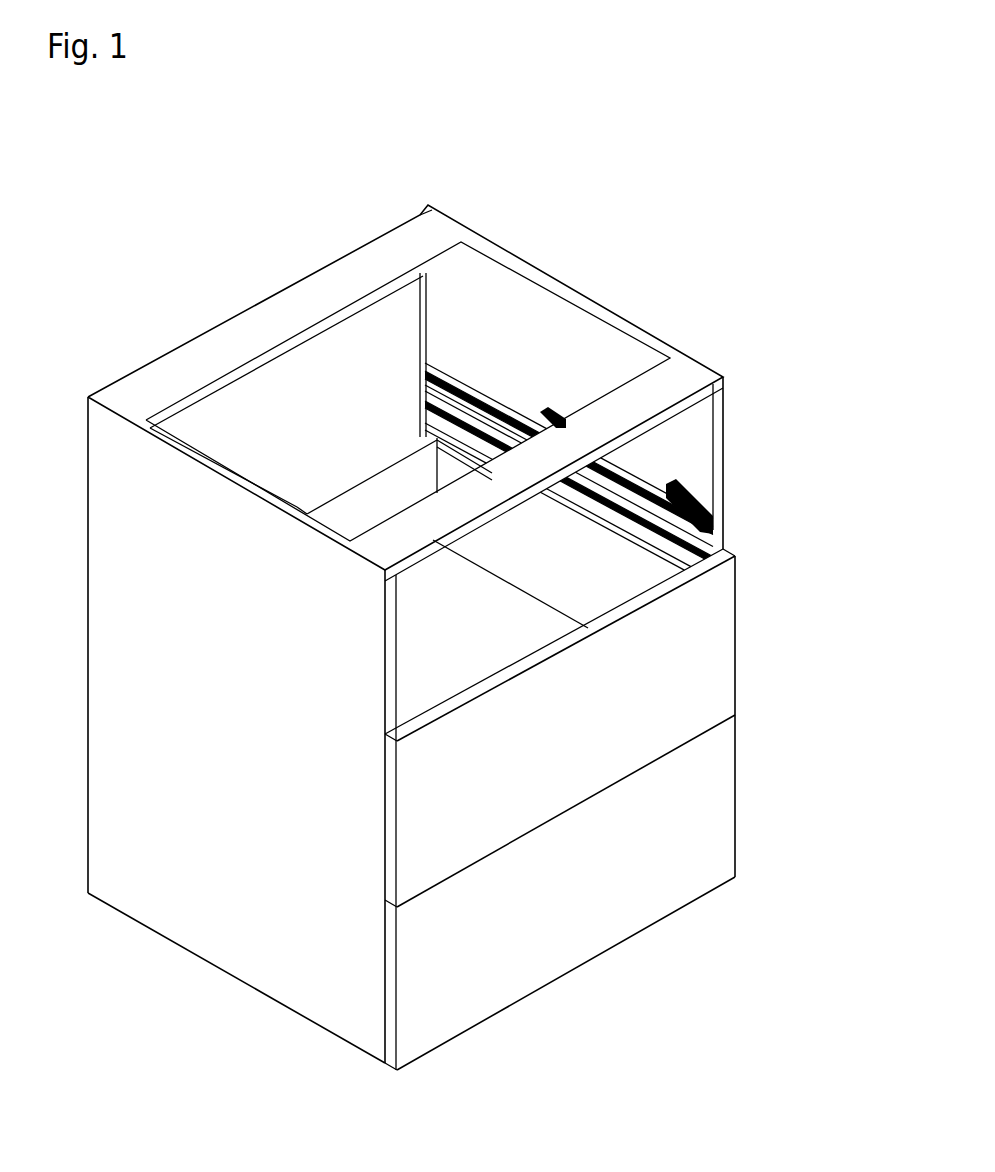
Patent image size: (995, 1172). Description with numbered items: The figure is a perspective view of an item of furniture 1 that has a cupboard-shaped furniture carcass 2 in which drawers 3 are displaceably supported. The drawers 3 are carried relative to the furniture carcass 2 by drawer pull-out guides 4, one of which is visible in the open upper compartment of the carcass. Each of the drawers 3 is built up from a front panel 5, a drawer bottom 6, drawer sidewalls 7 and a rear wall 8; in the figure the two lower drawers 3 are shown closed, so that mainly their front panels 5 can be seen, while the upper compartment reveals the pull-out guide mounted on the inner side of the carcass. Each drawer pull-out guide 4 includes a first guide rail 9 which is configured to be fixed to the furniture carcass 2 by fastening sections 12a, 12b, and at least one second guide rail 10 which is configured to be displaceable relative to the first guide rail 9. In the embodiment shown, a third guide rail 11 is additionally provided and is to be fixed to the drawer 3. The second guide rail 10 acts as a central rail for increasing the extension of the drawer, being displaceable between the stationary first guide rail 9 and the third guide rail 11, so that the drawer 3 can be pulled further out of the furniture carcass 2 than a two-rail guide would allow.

The item of furniture 1 is at (162, 1001).
The furniture carcass 2 is at (160, 910).
The drawer 3 is at (760, 638).
The drawer pull-out guide 4 is at (521, 380).
The front panel 5 is at (579, 741).
The drawer bottom 6 is at (457, 645).
The drawer sidewall 7 is at (447, 450).
The rear wall 8 is at (343, 478).
The first guide rail 9 is at (490, 383).
The second guide rail 10 is at (722, 535).
The third guide rail 11 is at (645, 485).
The fastening section 12a is at (552, 430).
The fastening section 12b is at (688, 487).